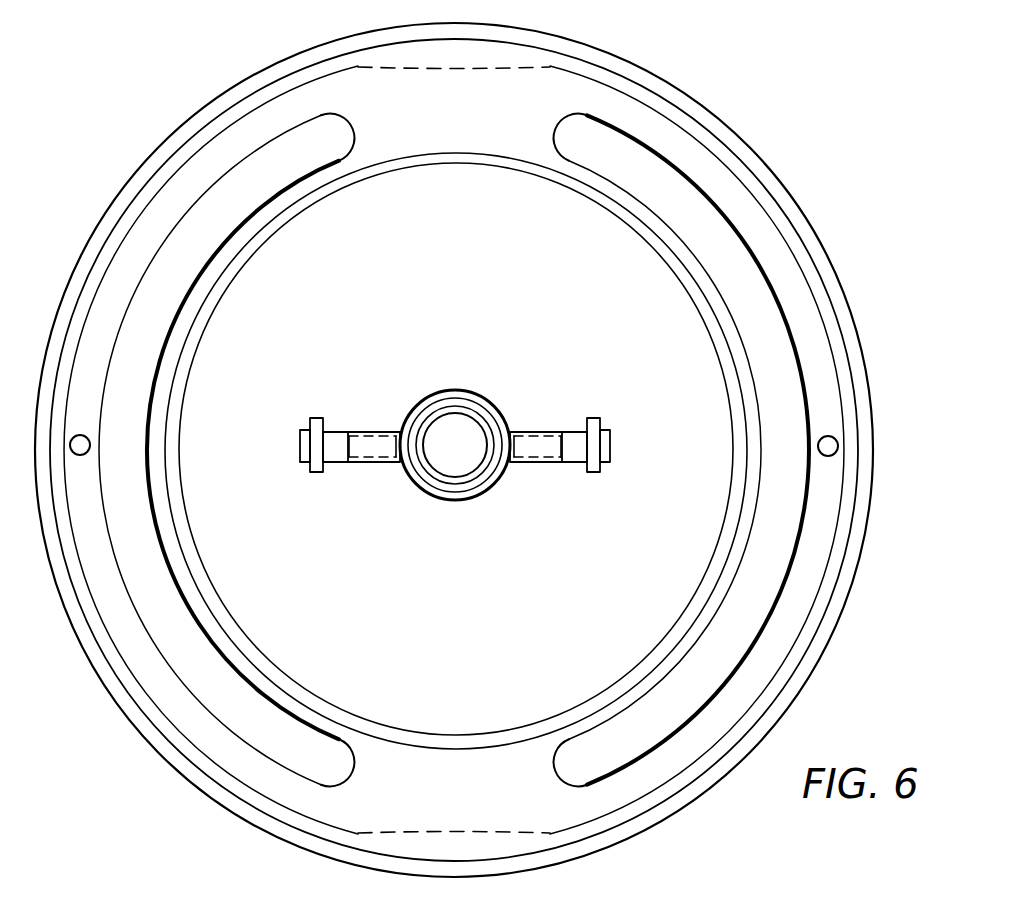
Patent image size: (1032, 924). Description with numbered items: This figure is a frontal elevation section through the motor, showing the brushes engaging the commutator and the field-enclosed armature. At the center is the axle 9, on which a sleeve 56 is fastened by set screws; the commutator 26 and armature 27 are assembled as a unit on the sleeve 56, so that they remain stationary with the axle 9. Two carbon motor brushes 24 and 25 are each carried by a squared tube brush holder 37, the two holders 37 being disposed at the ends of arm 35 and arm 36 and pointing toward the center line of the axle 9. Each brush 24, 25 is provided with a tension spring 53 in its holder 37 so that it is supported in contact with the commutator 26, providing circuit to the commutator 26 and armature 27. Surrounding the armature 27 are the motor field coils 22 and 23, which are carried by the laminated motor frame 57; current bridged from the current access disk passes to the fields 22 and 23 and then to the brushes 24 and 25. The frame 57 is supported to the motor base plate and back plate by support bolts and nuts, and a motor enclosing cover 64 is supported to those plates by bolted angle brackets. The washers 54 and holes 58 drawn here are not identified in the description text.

The axle 9 is at (438, 416).
The motor field 22 is at (188, 322).
The motor field 23 is at (714, 292).
The motor brush 24 is at (368, 463).
The motor brush 25 is at (547, 462).
The commutator 26 is at (473, 500).
The armature 27 is at (478, 152).
The arm 35 is at (320, 474).
The arm 36 is at (592, 476).
The brush holder 37 is at (398, 392).
The tension spring 53 is at (334, 432).
The washer 54 is at (308, 435).
The sleeve 56 is at (460, 412).
The laminated motor frame 57 is at (673, 115).
The mounting hole 58 is at (91, 437).
The motor enclosing cover 64 is at (813, 224).